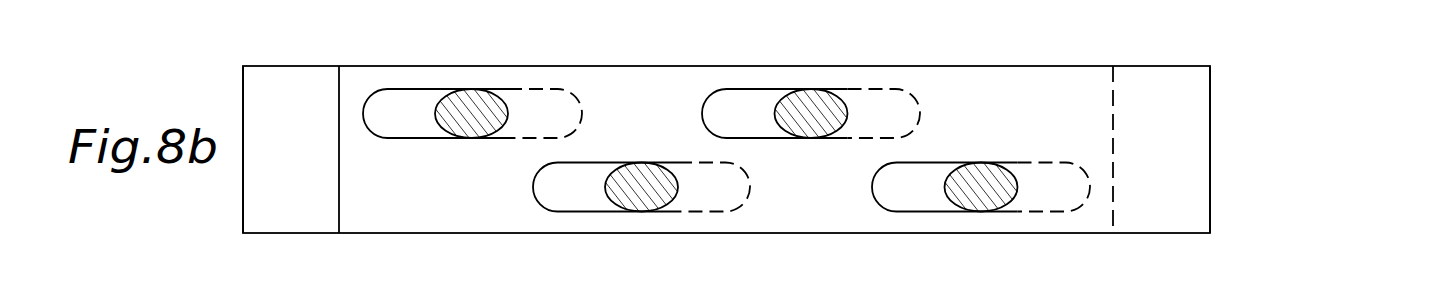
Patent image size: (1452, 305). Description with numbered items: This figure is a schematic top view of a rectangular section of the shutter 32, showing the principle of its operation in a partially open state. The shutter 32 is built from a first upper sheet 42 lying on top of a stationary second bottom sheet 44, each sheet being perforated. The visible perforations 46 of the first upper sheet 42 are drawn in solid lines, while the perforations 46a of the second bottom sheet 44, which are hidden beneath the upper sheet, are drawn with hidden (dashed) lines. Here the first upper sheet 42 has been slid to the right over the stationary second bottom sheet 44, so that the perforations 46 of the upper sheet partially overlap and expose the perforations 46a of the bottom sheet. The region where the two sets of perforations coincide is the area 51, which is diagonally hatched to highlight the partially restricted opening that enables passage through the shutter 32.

The shutter 32 is at (1322, 88).
The first upper sheet 42 is at (1202, 80).
The second bottom sheet 44 is at (255, 78).
The perforations of the first upper sheet 46 is at (932, 212).
The perforations of the second bottom sheet 46a is at (1067, 212).
The area enabling passage 51 is at (635, 190).